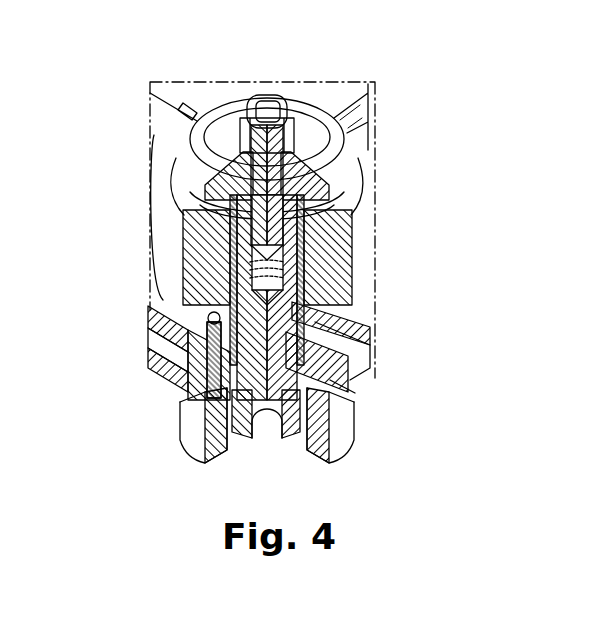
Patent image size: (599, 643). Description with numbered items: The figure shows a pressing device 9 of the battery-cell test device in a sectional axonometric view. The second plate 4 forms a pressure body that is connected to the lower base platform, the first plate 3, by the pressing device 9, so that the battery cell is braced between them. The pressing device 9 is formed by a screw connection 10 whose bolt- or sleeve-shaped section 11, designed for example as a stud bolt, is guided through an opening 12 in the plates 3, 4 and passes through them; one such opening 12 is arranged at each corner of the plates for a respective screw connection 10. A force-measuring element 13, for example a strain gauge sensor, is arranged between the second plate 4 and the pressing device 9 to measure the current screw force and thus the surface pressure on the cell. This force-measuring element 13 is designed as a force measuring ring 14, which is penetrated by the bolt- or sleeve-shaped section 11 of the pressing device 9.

The first plate 3 is at (357, 377).
The second plate 4 is at (166, 122).
The pressing device 9 is at (303, 231).
The screw connection 10 is at (280, 432).
The bolt- or sleeve-shaped section 11 is at (300, 270).
The opening 12 is at (314, 244).
The force-measuring element 13 is at (322, 122).
The force measuring ring 14 is at (335, 168).